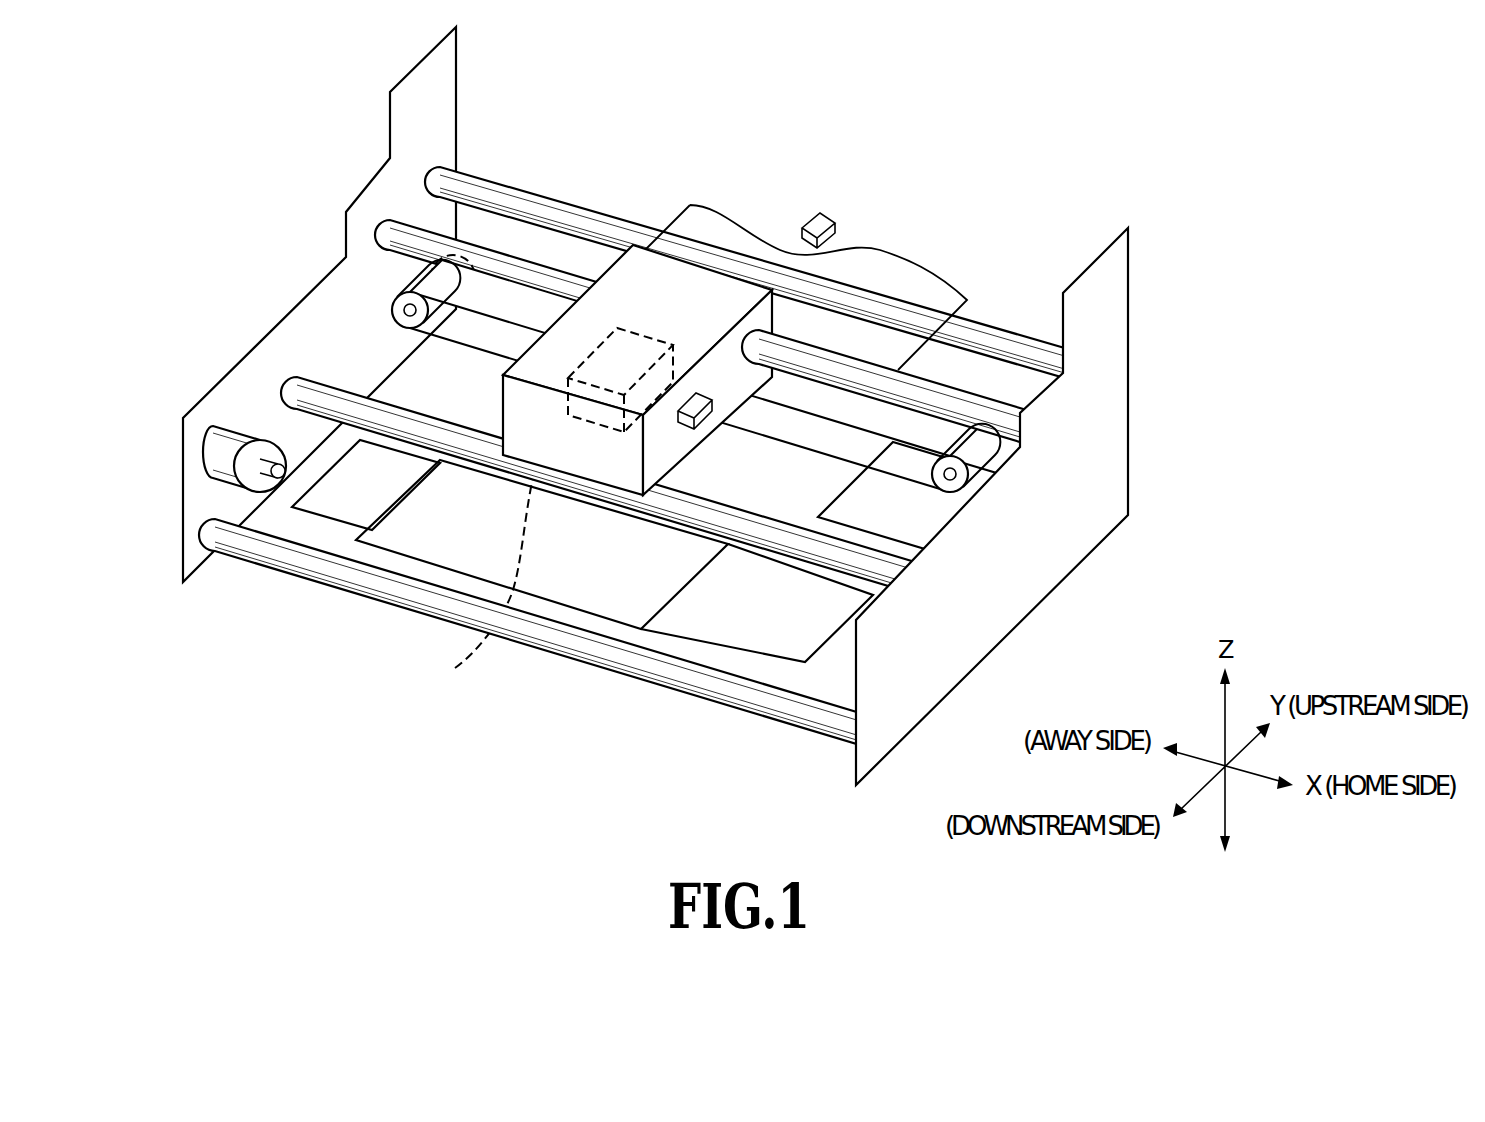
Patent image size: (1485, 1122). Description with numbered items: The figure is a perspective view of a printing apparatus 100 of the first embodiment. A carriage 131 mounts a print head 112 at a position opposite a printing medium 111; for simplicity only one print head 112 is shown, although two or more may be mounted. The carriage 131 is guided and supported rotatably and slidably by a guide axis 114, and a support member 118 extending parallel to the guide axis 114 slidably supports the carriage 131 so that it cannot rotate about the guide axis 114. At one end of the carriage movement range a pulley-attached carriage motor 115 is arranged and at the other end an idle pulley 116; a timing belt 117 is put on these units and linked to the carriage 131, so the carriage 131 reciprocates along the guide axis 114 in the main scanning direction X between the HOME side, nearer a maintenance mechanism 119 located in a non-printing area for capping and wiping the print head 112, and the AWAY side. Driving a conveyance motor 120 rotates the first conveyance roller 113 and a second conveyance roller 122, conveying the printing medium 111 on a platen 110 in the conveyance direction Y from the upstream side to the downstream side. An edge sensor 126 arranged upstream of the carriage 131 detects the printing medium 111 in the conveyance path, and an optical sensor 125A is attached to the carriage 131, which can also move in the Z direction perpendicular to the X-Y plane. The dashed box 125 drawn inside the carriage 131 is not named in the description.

The printing apparatus 100 is at (1018, 150).
The platen 110 is at (735, 630).
The printing medium 111 is at (922, 298).
The print head 112 is at (499, 478).
The first conveyance roller 113 is at (508, 197).
The guide axis 114 is at (383, 233).
The pulley-attached carriage motor 115 is at (397, 303).
The idle pulley 116 is at (962, 475).
The timing belt 117 is at (963, 452).
The support member 118 is at (300, 390).
The maintenance mechanism 119 is at (918, 516).
The conveyance motor 120 is at (220, 455).
The second conveyance roller 122 is at (262, 552).
The hidden unit inside carriage 125 is at (620, 380).
The optical sensor 125A is at (683, 422).
The edge sensor 126 is at (820, 215).
The carriage 131 is at (673, 280).